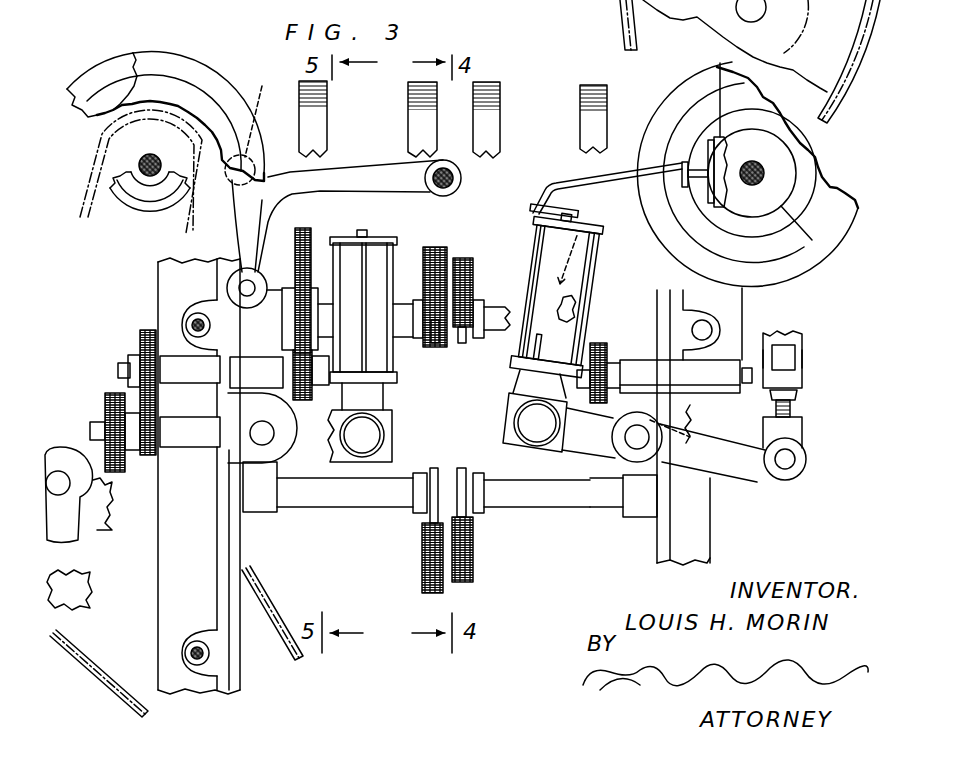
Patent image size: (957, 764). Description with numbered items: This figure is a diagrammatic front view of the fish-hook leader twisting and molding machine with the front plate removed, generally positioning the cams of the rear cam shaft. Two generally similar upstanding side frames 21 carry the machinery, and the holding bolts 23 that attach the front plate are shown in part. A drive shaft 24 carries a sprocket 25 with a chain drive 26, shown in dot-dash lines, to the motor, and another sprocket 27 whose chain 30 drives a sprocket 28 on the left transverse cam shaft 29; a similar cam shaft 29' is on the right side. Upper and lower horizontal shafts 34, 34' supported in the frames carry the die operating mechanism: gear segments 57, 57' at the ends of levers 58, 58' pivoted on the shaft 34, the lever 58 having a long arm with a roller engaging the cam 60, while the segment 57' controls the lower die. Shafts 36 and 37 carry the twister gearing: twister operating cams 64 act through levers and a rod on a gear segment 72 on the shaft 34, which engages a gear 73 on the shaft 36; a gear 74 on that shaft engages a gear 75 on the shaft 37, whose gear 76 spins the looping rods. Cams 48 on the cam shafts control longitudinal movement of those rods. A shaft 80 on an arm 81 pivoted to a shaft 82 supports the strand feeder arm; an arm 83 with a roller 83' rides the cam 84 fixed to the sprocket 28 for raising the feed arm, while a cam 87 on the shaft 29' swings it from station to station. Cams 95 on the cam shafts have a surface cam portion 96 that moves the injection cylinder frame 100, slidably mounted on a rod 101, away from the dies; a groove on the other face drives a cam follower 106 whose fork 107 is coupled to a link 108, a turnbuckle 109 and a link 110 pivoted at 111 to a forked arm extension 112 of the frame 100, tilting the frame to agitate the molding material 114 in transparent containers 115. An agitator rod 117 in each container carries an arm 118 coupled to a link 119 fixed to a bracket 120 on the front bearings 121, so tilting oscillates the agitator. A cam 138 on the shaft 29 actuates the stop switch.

The side frame 21 is at (742, 309).
The holding bolts 23 is at (702, 320).
The drive shaft 24 is at (59, 476).
The sprocket 25 is at (80, 590).
The chain drive 26 is at (617, 42).
The sprocket 27 is at (105, 522).
The sprocket 28 is at (100, 150).
The transverse cam shaft 29 is at (150, 148).
The cam shaft 29' is at (803, 160).
The chain 30 is at (86, 190).
The upper horizontal shaft 34 is at (414, 297).
The lower horizontal shaft 34' is at (450, 507).
The shaft 36 is at (747, 385).
The shaft 37 is at (100, 422).
The cam 48 is at (125, 205).
The gear segment 57 is at (449, 281).
The gear segment 57' is at (444, 533).
The lever 58 is at (448, 350).
The lever 58' is at (447, 477).
The cam 60 is at (474, 133).
The twister operating cam 64 is at (327, 112).
The gear segment 72 is at (307, 236).
The gear 73 is at (598, 343).
The gear 74 is at (150, 330).
The gear 75 is at (148, 455).
The gear 76 is at (113, 388).
The shaft 80 is at (458, 178).
The arm 81 is at (253, 218).
The shaft 82 is at (253, 247).
The arm 83 is at (335, 214).
The roller 83' is at (255, 128).
The cam 84 is at (84, 78).
The cam 87 is at (653, 102).
The cam 95 is at (143, 63).
The surface cam portion 96 is at (173, 87).
The injection cylinder frame 100 is at (587, 432).
The rod 101 is at (648, 430).
The cam follower 106 is at (796, 333).
The fork 107 is at (797, 350).
The link 108 is at (798, 378).
The turnbuckle 109 is at (792, 397).
The link 110 is at (802, 432).
The pivot 111 is at (795, 460).
The forked arm extension 112 is at (742, 470).
The molding material 114 is at (582, 297).
The transparent container 115 is at (573, 330).
The agitator rod 117 is at (573, 255).
The arm 118 is at (533, 214).
The link 119 is at (572, 182).
The bracket 120 is at (722, 190).
The front bearing 121 is at (720, 64).
The cam 138 is at (156, 190).